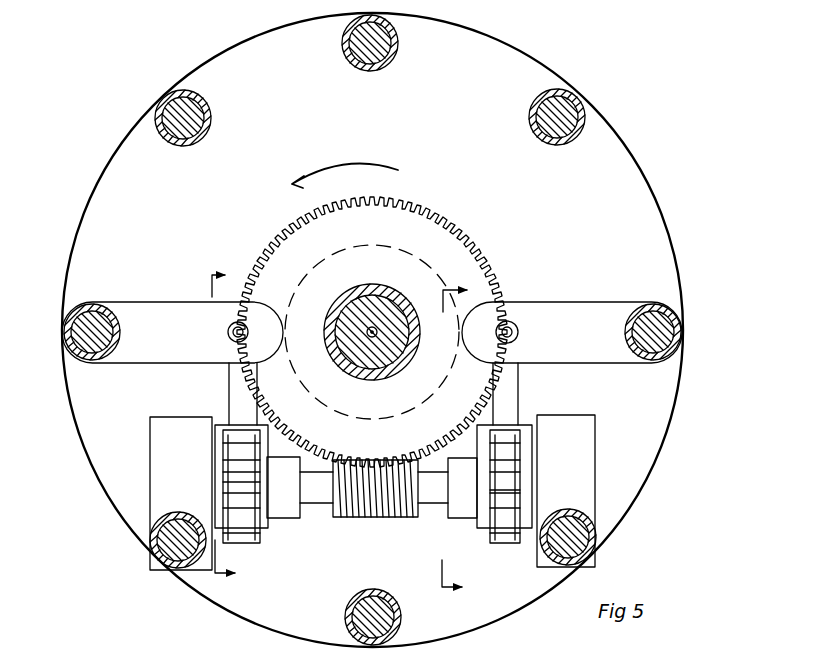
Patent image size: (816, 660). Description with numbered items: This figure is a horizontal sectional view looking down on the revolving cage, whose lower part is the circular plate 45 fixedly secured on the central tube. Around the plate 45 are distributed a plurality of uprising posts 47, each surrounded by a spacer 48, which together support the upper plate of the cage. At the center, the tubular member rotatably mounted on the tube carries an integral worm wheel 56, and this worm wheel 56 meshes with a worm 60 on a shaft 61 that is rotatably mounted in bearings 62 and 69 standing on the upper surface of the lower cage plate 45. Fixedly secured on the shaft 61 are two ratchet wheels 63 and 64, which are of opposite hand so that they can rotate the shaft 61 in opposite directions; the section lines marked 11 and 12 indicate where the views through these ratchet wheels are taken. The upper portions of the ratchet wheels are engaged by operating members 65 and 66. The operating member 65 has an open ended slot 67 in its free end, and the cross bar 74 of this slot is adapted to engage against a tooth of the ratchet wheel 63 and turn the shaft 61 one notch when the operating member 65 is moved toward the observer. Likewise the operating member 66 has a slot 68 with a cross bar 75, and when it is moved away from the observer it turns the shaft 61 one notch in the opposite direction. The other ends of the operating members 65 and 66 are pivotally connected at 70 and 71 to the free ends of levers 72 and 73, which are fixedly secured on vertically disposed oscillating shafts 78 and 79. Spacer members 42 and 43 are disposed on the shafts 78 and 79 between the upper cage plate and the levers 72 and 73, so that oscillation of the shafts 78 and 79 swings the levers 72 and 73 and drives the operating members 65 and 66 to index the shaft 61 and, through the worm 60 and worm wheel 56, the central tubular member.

The section line 11- 11 is at (468, 439).
The section line 12- 12 is at (237, 424).
The spacer member 42 is at (682, 345).
The spacer member 43 is at (70, 350).
The circular plate 45 is at (664, 223).
The uprising post 47 is at (207, 110).
The spacer 48 is at (200, 137).
The worm wheel 56 is at (484, 252).
The worm 60 is at (365, 520).
The shaft 61 is at (310, 518).
The bearing 62 is at (181, 493).
The ratchet wheel 63 is at (258, 545).
The ratchet wheel 64 is at (490, 532).
The operating member 65 is at (229, 398).
The operating member 66 is at (518, 396).
The open ended slot 67 is at (262, 528).
The slot 68 is at (520, 535).
The bearing 69 is at (566, 491).
The pivotal connection 70 is at (230, 337).
The pivotal connection 71 is at (518, 332).
The lever 72 is at (172, 340).
The lever 73 is at (594, 340).
The cross bar 74 is at (242, 482).
The cross bar 75 is at (520, 490).
The oscillating shaft 78 is at (100, 333).
The oscillating shaft 79 is at (680, 312).